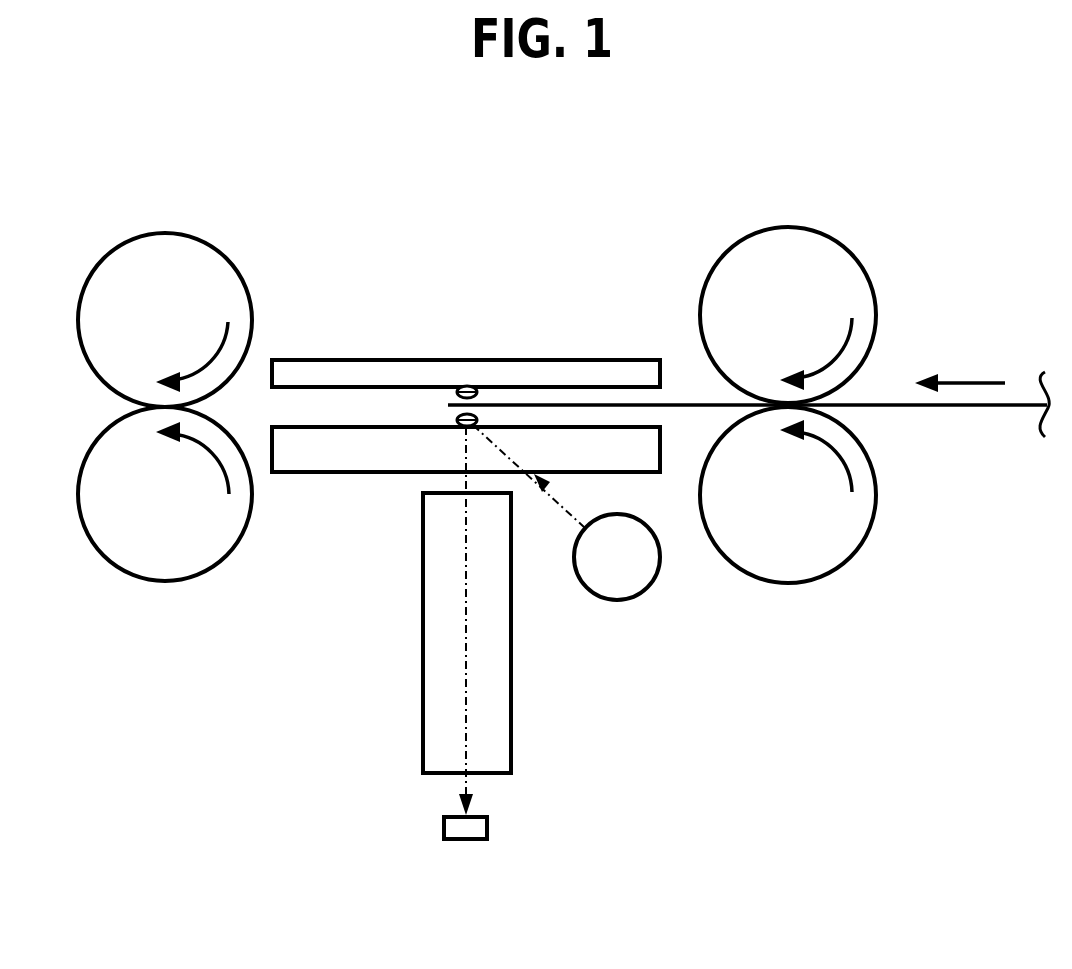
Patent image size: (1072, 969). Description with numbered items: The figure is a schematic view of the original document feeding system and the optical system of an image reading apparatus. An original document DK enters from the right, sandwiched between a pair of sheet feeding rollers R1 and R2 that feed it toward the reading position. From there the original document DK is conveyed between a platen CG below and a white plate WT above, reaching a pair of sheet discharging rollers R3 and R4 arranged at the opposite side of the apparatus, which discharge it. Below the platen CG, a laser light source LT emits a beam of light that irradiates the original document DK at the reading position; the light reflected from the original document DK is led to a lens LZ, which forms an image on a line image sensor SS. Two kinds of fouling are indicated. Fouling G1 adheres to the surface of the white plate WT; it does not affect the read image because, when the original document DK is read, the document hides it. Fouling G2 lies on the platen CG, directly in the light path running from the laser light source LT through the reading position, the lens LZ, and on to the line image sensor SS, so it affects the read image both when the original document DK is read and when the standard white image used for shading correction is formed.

The sheet feeding roller R1 is at (875, 285).
The sheet feeding roller R2 is at (877, 518).
The sheet discharging roller R3 is at (103, 261).
The sheet discharging roller R4 is at (83, 525).
The white plate WT is at (390, 360).
The platen CG is at (383, 472).
The fouling G1 is at (460, 388).
The fouling G2 is at (461, 420).
The lens LZ is at (423, 749).
The laser light source LT is at (658, 573).
The line image sensor SS is at (450, 839).
The original document DK is at (937, 406).